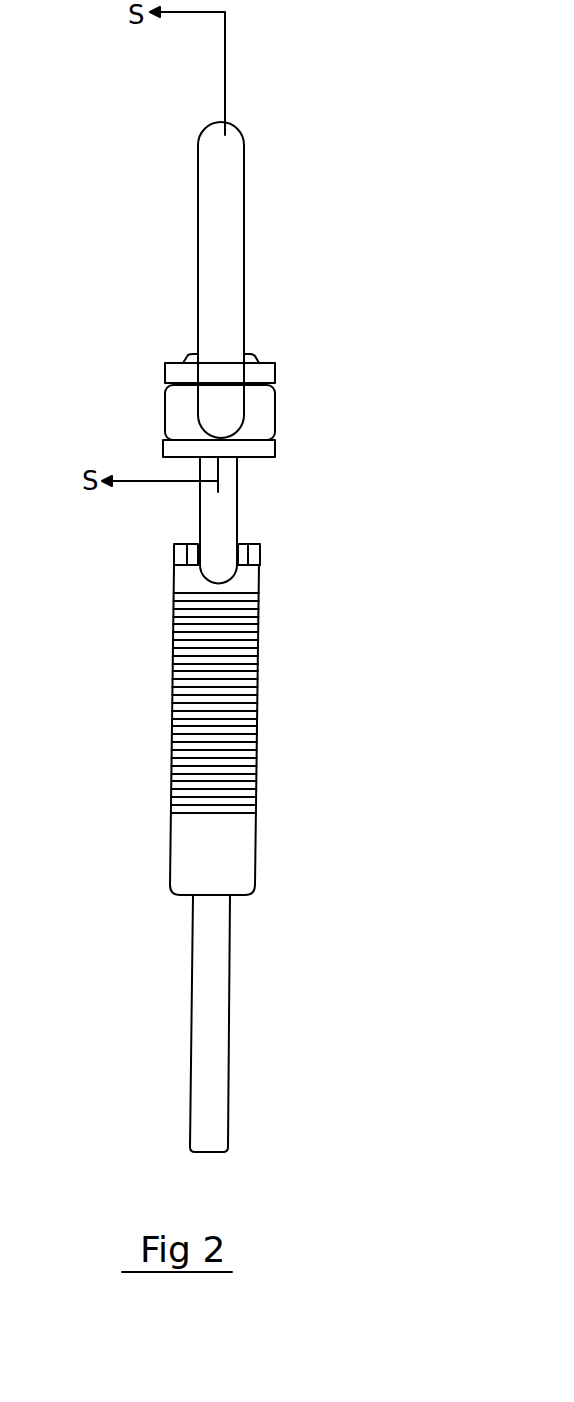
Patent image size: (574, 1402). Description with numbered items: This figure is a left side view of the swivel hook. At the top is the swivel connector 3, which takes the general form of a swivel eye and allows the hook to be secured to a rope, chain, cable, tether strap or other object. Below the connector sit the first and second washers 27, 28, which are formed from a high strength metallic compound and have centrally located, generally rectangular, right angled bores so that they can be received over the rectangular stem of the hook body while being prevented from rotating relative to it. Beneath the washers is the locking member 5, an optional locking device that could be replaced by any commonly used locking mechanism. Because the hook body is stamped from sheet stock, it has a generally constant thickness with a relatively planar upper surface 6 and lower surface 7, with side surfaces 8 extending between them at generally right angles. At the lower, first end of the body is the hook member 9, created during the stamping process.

The swivel connector 3 is at (245, 214).
The second washer 28 is at (268, 371).
The first washer 27 is at (265, 449).
The upper surface 6 is at (238, 526).
The lower surface 7 is at (198, 527).
The side surfaces 8 is at (222, 519).
The locking member 5 is at (259, 693).
The hook member 9 is at (218, 982).